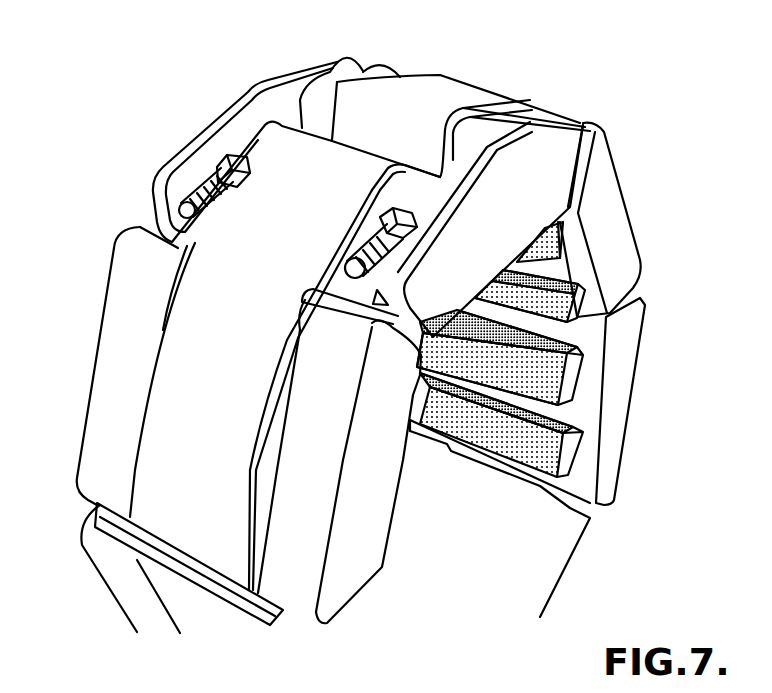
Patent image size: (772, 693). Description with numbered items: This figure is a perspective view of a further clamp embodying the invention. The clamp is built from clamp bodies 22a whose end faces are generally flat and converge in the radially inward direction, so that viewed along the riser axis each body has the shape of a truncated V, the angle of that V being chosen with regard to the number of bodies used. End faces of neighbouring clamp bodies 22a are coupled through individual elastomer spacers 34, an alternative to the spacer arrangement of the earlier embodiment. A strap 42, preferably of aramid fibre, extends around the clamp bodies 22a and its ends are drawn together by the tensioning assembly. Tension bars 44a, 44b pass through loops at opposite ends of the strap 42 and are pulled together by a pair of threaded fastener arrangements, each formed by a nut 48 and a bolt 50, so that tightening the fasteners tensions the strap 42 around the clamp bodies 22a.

The clamp body 22a is at (593, 198).
The elastomer spacer 34 is at (130, 537).
The strap 42 is at (223, 264).
The tension bar 44a is at (250, 132).
The tension bar 44b is at (340, 70).
The nut 48 is at (230, 157).
The bolt 50 is at (185, 212).